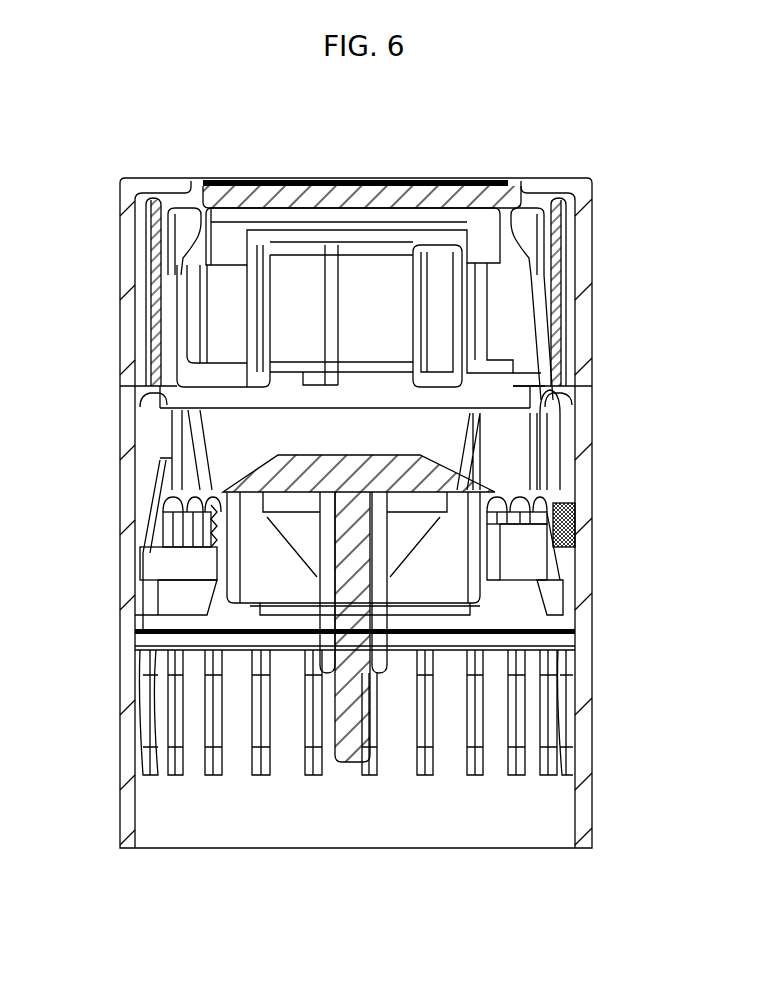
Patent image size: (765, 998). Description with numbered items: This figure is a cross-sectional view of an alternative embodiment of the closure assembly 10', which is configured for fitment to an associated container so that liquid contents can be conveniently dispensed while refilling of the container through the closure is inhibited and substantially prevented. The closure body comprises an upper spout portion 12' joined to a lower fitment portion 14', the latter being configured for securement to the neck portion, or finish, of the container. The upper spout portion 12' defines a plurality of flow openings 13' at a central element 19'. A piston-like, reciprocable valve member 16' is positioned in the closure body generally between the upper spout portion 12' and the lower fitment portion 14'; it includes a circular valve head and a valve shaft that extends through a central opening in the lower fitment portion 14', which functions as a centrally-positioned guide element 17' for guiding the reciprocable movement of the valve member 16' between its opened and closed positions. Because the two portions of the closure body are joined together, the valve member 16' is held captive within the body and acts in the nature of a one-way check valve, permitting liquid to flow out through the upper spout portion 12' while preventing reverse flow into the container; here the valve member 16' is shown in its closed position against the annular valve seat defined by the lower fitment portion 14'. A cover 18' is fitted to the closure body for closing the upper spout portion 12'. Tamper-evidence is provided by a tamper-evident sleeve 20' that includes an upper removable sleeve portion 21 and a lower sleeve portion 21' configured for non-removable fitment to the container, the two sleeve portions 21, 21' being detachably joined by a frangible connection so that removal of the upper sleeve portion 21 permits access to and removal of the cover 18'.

The tamper-evident sleeve 20' is at (319, 498).
The upper removable sleeve portion 21 is at (98, 288).
The lower sleeve portion 21' is at (319, 522).
The closure assembly 10' is at (303, 702).
The upper spout portion 12' is at (592, 337).
The flow openings 13' is at (583, 370).
The lower fitment portion 14' is at (555, 502).
The valve member 16' is at (280, 551).
The guide element 17' is at (357, 657).
The cover 18' is at (363, 202).
The central element 19' is at (356, 263).